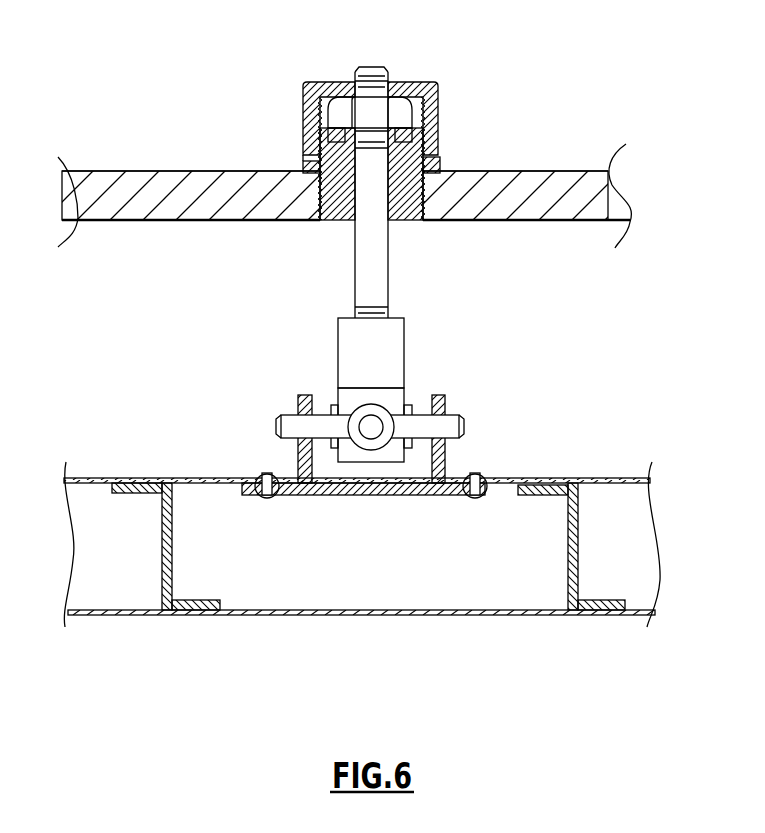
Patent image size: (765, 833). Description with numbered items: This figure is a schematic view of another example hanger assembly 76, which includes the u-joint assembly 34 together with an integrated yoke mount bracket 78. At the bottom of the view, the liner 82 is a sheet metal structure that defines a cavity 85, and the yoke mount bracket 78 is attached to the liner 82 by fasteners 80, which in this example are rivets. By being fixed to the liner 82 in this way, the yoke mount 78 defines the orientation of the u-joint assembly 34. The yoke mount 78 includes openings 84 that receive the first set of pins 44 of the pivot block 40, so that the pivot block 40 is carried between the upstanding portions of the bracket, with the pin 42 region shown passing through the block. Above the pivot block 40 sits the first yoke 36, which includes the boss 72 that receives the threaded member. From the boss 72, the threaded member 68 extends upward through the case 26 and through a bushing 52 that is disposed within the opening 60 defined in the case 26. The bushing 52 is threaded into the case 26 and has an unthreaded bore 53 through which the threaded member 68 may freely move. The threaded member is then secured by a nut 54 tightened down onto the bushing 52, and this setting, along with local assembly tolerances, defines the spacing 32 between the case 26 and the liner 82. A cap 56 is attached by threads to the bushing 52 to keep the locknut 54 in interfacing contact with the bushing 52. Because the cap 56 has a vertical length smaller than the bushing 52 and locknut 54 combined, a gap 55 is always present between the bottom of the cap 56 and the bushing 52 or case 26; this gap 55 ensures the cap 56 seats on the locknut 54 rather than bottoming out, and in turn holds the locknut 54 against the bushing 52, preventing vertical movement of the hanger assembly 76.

The case 26 is at (117, 198).
The spacing 32 is at (362, 480).
The u-joint assembly 34 is at (362, 433).
The first yoke 36 is at (395, 398).
The pivot block 40 is at (408, 428).
The pivot rod 42 is at (465, 436).
The first set of pins 44 is at (343, 386).
The bushing 52 is at (427, 163).
The bore 53 is at (348, 183).
The locknut 54 is at (407, 112).
The gap 55 is at (300, 157).
The cap 56 is at (433, 82).
The opening 60 is at (427, 224).
The bolt 68 is at (385, 66).
The boss 72 is at (395, 340).
The hanger assembly 76 is at (344, 190).
The yoke mount bracket 78 is at (443, 402).
The fasteners 80 is at (265, 498).
The liner 82 is at (558, 478).
The openings 84 is at (296, 411).
The cavity 85 is at (330, 560).